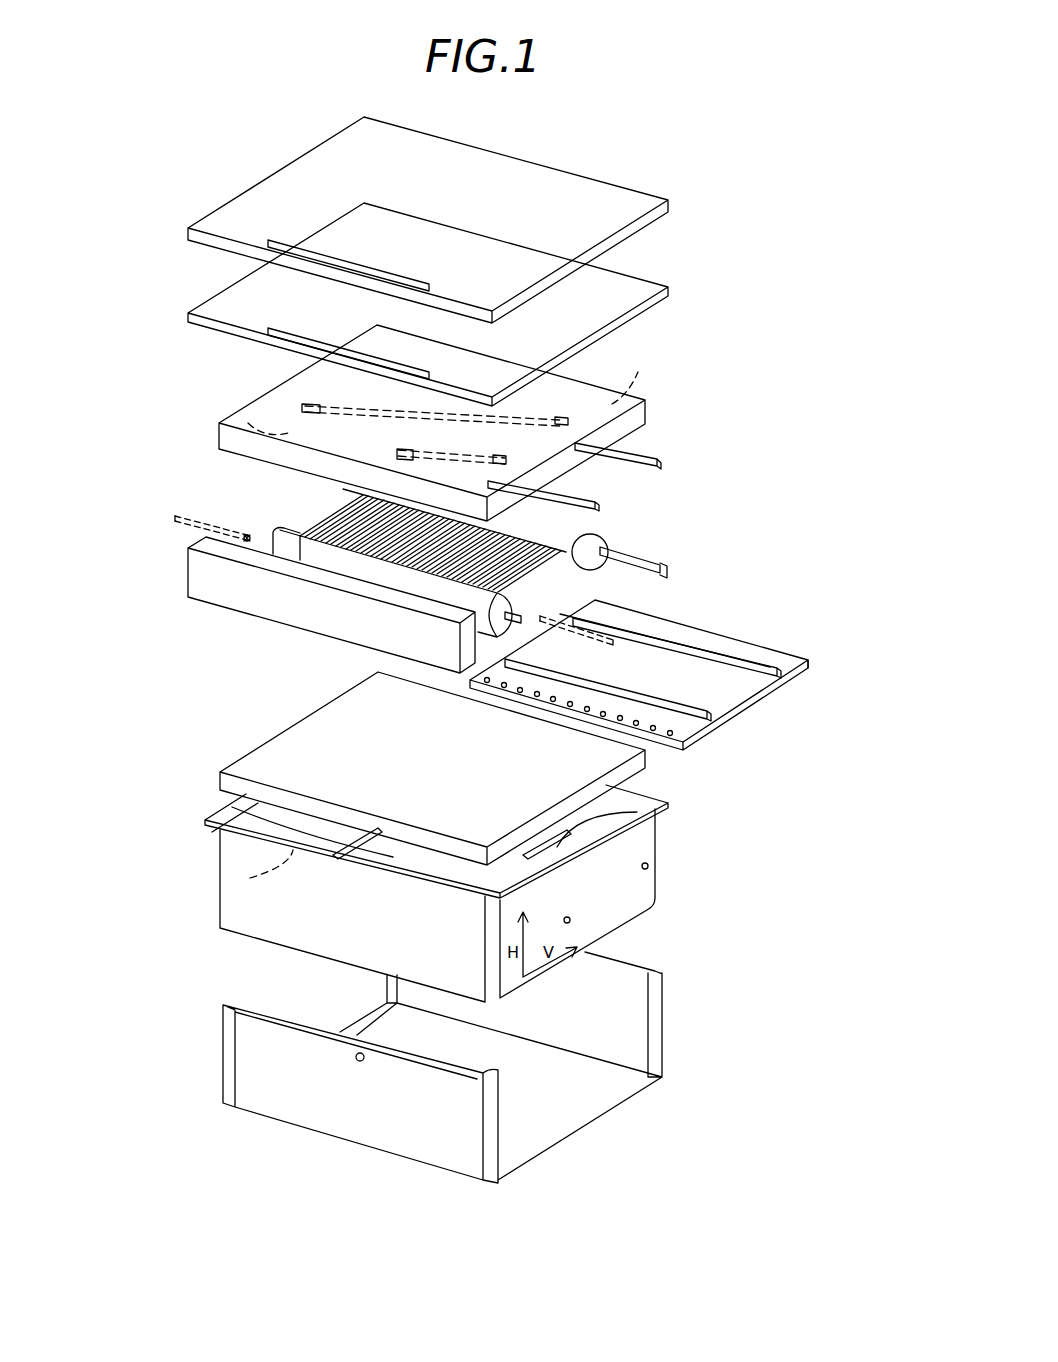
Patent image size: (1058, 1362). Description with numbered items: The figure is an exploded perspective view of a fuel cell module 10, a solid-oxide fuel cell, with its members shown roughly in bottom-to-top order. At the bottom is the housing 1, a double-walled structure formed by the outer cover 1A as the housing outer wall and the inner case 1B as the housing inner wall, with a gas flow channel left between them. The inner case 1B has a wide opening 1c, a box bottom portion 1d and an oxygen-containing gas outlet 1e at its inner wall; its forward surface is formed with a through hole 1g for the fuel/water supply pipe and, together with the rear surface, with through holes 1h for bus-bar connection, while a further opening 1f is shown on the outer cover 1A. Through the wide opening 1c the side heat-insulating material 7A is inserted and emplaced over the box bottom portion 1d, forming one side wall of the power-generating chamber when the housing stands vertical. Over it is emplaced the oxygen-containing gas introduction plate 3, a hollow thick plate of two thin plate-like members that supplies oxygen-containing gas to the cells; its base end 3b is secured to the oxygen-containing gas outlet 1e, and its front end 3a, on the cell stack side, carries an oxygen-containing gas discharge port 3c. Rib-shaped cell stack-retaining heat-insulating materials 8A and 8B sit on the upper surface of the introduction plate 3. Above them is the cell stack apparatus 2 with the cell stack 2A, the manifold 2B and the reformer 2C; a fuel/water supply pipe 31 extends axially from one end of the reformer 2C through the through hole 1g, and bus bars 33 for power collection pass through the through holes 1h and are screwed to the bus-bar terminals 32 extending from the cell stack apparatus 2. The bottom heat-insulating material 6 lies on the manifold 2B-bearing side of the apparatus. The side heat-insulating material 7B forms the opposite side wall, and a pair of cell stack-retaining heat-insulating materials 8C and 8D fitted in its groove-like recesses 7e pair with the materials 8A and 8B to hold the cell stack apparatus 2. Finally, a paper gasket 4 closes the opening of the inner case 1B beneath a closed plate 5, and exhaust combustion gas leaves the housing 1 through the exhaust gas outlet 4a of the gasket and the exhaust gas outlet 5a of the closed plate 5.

The housing 1 is at (467, 984).
The outer cover 1A is at (500, 1060).
The inner case 1B is at (444, 893).
The wide opening 1c is at (208, 822).
The box bottom portion 1d is at (248, 843).
The oxygen-containing gas outlet 1e is at (657, 817).
The hole 1f is at (364, 1062).
The through hole for fuel/water supply pipe 1g is at (645, 866).
The through hole for bus-bar connection 1h is at (250, 878).
The cell stack apparatus 2 is at (450, 527).
The cell stack 2A is at (320, 494).
The manifold 2B is at (278, 517).
The reformer 2C is at (611, 537).
The oxygen-containing gas introduction plate 3 is at (675, 693).
The front end 3a is at (650, 797).
The base end 3b is at (690, 628).
The oxygen-containing gas discharge port 3c is at (663, 727).
The paper gasket 4 is at (697, 293).
The exhaust gas outlet 4a is at (365, 363).
The closed plate 5 is at (688, 207).
The exhaust gas outlet 5a is at (368, 273).
The bottom heat-insulating material 6 is at (176, 575).
The side heat-insulating material 7A is at (204, 781).
The side heat-insulating material 7B is at (673, 415).
The groove-like recesses 7e is at (243, 422).
The cell stack-retaining heat-insulating material 8A is at (690, 700).
The cell stack-retaining heat-insulating material 8B is at (735, 650).
The cell stack-retaining heat-insulating material 8C is at (600, 505).
The cell stack-retaining heat-insulating material 8D is at (662, 464).
The fuel cell module 10 is at (717, 1023).
The fuel/water supply pipe 31 is at (665, 566).
The bus-bar terminals 32 is at (262, 540).
The bus bar 33 is at (173, 521).